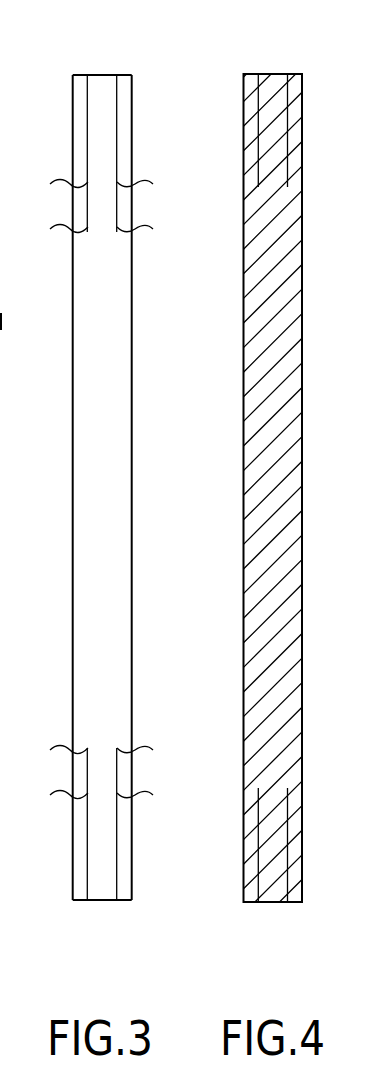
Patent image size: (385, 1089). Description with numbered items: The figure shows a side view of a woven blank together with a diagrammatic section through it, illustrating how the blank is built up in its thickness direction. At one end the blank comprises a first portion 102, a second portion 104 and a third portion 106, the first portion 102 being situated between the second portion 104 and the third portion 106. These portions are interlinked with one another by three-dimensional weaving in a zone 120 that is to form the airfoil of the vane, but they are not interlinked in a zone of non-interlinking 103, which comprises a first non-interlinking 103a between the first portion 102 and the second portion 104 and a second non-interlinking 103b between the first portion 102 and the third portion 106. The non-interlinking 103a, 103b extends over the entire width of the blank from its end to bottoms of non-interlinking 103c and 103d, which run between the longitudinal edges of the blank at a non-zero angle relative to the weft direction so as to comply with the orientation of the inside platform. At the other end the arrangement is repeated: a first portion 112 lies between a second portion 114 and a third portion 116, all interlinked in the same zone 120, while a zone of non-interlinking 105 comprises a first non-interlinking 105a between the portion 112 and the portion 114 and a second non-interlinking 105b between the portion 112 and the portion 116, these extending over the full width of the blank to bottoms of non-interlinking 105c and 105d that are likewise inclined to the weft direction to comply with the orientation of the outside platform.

The first portion 102 is at (95, 892).
The zone of non-interlinking 103 is at (52, 855).
The first non-interlinking 103a is at (50, 808).
The second non-interlinking 103b is at (154, 808).
The bottom of non-interlinking 103c is at (50, 764).
The bottom of non-interlinking 103d is at (154, 763).
The second portion 104 is at (80, 860).
The zone of non-interlinking 105 is at (156, 127).
The first non-interlinking 105a is at (50, 172).
The second non-interlinking 105b is at (154, 172).
The bottom of non-interlinking 105c is at (50, 217).
The bottom of non-interlinking 105d is at (154, 217).
The third portion 106 is at (125, 860).
The first portion 112 is at (94, 83).
The second portion 114 is at (79, 117).
The third portion 116 is at (125, 117).
The zone 120 is at (66, 584).